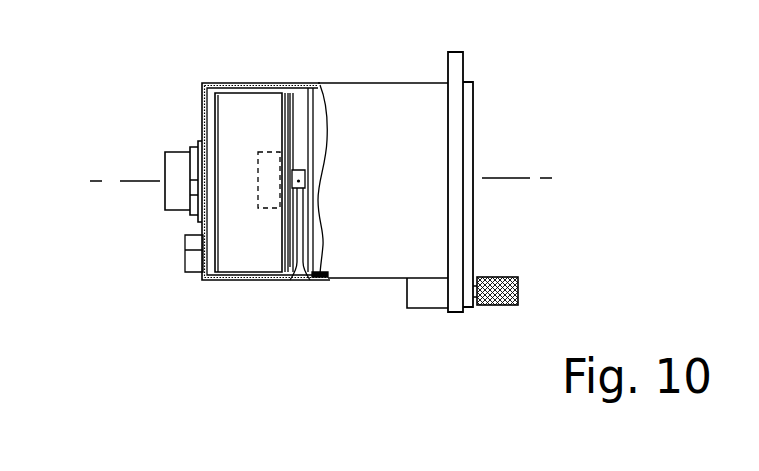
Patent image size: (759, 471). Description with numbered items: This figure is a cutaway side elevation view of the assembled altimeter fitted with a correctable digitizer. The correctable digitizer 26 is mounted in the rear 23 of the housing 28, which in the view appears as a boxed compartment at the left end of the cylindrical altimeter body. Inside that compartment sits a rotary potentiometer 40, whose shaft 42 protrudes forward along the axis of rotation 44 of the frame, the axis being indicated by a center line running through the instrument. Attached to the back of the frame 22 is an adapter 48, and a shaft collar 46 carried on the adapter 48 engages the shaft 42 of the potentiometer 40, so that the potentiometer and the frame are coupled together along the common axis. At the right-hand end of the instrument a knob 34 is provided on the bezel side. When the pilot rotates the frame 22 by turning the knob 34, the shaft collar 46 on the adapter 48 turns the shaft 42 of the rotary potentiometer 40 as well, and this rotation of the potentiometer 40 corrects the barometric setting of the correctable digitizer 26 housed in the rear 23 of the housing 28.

The frame 22 is at (320, 85).
The rear 23 is at (228, 83).
The correctable digitizer 26 is at (232, 127).
The housing 28 is at (383, 83).
The knob 34 is at (495, 277).
The rotary potentiometer 40 is at (268, 190).
The shaft 42 is at (296, 268).
The axis of rotation 44 is at (148, 181).
The shaft collar 46 is at (300, 274).
The adapter 48 is at (323, 278).